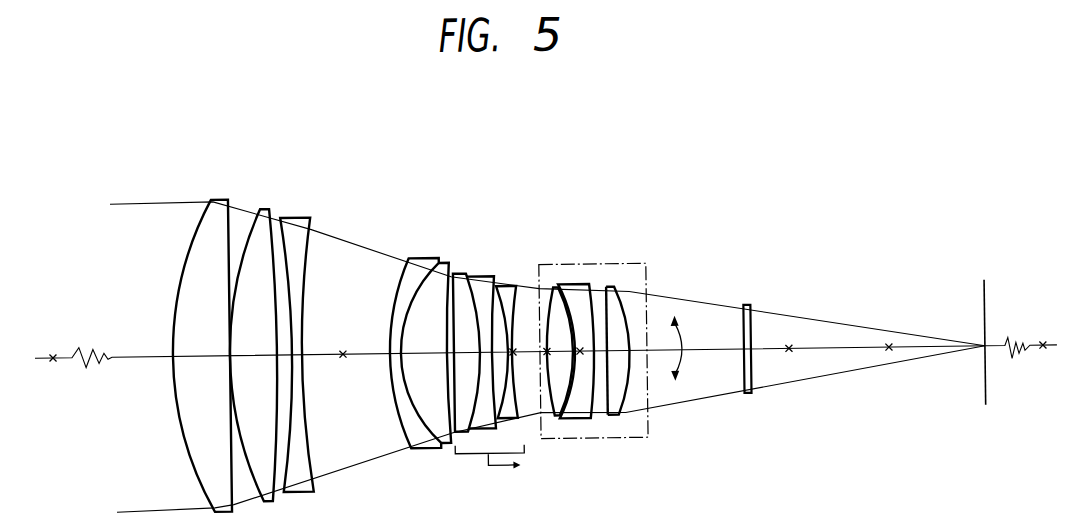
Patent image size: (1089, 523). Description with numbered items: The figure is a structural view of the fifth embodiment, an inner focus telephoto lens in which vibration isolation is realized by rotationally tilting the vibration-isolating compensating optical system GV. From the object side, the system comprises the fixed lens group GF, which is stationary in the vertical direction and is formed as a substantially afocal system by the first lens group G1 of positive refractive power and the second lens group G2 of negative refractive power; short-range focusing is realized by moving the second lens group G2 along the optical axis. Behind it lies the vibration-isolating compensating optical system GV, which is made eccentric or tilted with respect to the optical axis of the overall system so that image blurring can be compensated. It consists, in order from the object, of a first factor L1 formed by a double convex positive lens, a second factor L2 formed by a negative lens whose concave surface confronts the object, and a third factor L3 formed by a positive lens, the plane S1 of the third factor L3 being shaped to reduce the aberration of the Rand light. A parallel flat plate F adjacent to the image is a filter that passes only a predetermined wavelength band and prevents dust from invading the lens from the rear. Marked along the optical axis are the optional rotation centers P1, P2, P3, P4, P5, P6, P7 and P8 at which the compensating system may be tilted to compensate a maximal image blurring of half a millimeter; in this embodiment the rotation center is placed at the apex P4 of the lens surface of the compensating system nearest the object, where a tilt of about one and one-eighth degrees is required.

The first lens group G1 is at (460, 184).
The second lens group G2 is at (525, 268).
The fixed lens group GF is at (495, 123).
The vibration-isolating compensating optical system GV is at (643, 184).
The first factor L1 is at (554, 292).
The second factor L2 is at (580, 288).
The third factor L3 is at (610, 292).
The plane S1 is at (607, 414).
The parallel flat plate F is at (747, 312).
The rotation center P1 is at (53, 362).
The rotation center P2 is at (343, 362).
The rotation center P3 is at (513, 362).
The rotation center P4 is at (547, 362).
The rotation center P5 is at (580, 362).
The rotation center P6 is at (789, 362).
The rotation center P7 is at (889, 362).
The rotation center P8 is at (1043, 362).